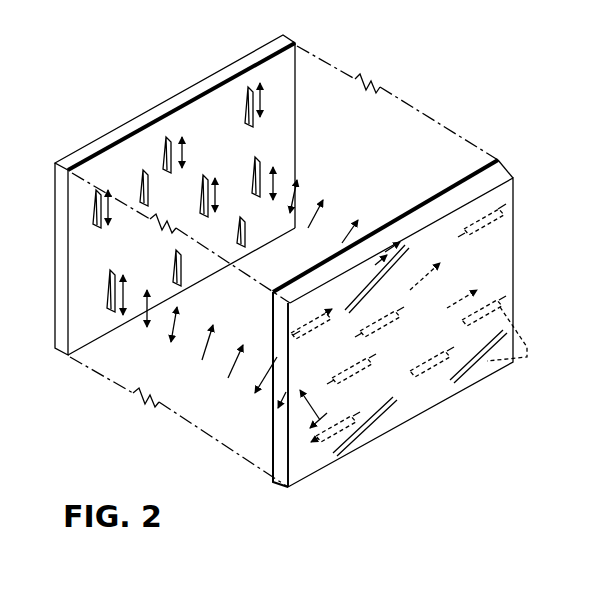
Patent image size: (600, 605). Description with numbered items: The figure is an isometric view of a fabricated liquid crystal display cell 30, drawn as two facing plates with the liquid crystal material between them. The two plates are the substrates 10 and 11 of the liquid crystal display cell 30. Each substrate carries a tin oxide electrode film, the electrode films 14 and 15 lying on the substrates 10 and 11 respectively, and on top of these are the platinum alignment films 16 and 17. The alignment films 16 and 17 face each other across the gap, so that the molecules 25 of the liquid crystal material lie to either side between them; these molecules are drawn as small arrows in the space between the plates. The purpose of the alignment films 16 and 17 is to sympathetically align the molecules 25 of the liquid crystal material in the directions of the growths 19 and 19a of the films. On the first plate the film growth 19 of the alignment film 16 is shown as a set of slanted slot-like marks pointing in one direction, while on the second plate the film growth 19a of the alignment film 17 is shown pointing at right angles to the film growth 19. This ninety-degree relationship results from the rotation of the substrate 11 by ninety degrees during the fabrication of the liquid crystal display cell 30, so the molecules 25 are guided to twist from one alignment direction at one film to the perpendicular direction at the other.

The substrate 10 is at (178, 95).
The substrate 11 is at (513, 180).
The tin oxide electrode film 14 is at (295, 43).
The tin oxide electrode film 15 is at (498, 160).
The platinum alignment film 16 is at (204, 173).
The platinum alignment film 17 is at (521, 344).
The film growth 19 is at (165, 163).
The film growth 19a is at (342, 443).
The molecules of liquid crystal material 25 is at (322, 200).
The liquid crystal display cell 30 is at (352, 60).